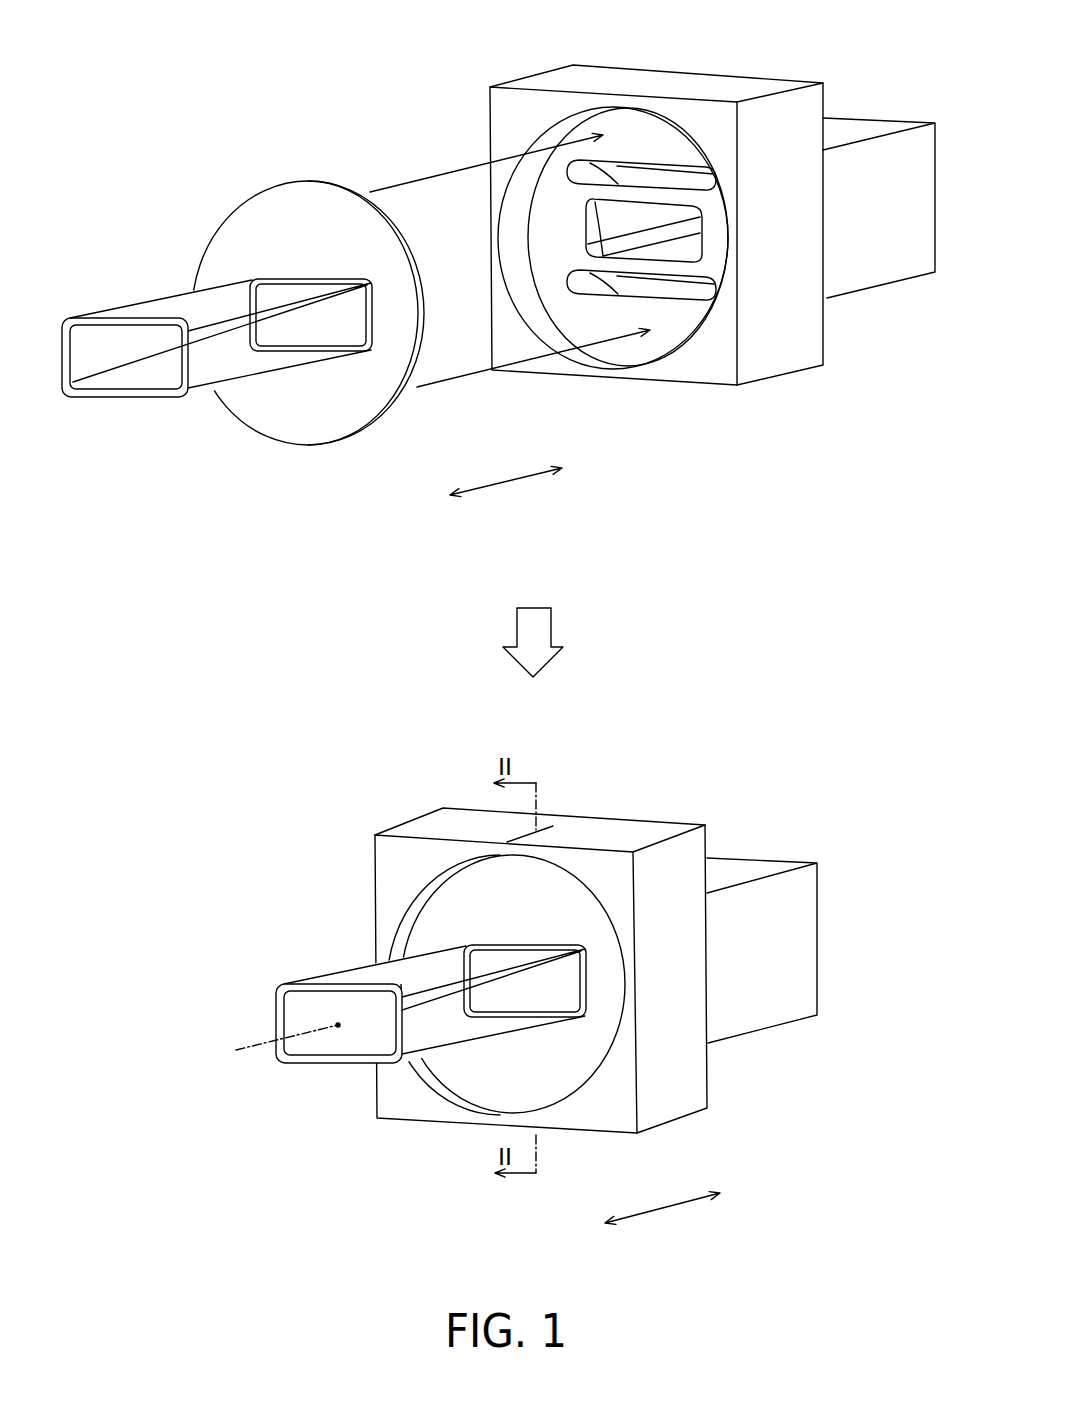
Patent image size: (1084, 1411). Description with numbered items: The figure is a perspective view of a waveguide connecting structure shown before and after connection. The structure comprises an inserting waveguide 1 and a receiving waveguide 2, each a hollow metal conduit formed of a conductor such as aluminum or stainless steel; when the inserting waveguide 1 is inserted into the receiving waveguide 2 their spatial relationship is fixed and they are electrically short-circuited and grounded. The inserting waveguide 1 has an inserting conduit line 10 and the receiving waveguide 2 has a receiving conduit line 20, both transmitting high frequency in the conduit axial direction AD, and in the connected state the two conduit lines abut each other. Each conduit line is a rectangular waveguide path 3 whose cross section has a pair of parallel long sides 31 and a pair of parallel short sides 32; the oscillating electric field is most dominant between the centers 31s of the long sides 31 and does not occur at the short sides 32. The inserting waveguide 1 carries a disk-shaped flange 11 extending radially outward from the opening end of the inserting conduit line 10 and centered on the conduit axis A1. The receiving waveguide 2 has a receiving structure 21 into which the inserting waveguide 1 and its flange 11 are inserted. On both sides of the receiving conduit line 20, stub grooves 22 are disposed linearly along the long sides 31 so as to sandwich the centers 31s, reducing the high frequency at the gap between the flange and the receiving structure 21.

The inserting waveguide 1 is at (382, 621).
The receiving waveguide 2 is at (655, 568).
The rectangular waveguide path 3 is at (382, 666).
The inserting conduit line 10 is at (110, 343).
The flange 11 is at (250, 215).
The receiving conduit line 20 is at (601, 228).
The receiving structure 21 is at (650, 136).
The stub groove 22 is at (580, 167).
The long side 31 is at (429, 994).
The center of the long side 31s is at (333, 965).
The short side 32 is at (304, 1020).
The conduit axis A1 is at (273, 1045).
The conduit axial direction AD is at (585, 857).